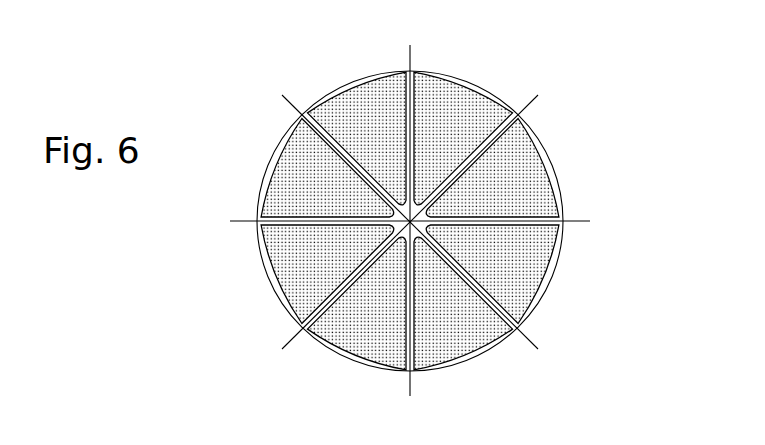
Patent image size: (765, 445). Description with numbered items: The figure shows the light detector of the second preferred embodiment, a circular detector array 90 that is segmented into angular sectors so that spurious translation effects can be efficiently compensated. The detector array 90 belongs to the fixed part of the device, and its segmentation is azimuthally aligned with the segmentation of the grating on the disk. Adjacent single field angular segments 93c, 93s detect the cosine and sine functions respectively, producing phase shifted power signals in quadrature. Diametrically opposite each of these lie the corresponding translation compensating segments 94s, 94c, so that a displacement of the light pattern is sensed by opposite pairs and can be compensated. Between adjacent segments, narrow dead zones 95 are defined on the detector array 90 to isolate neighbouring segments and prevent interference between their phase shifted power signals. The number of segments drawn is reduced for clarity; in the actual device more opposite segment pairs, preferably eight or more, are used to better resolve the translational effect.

The detector array 90 is at (437, 68).
The cosine angular segment 93c is at (468, 115).
The sine angular segment 93s is at (525, 170).
The dead zone 95 is at (505, 226).
The translation compensating sine segment 94s is at (292, 258).
The translation compensating cosine segment 94c is at (358, 330).